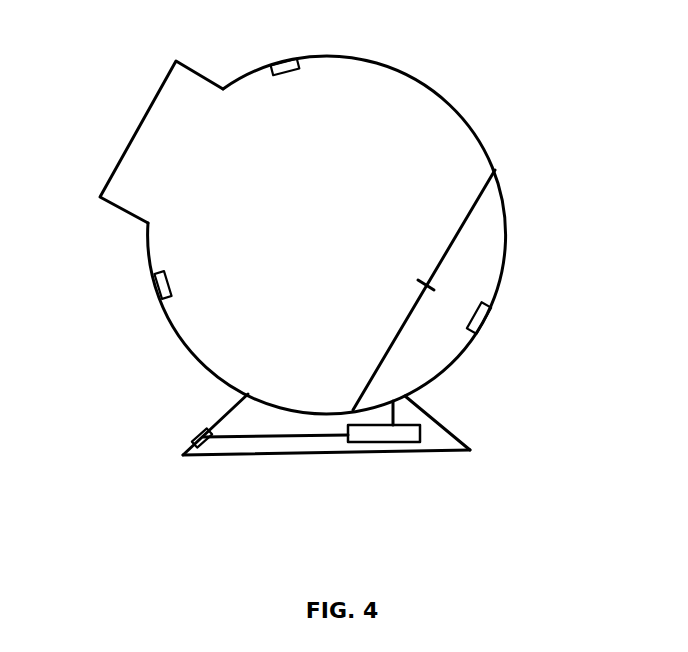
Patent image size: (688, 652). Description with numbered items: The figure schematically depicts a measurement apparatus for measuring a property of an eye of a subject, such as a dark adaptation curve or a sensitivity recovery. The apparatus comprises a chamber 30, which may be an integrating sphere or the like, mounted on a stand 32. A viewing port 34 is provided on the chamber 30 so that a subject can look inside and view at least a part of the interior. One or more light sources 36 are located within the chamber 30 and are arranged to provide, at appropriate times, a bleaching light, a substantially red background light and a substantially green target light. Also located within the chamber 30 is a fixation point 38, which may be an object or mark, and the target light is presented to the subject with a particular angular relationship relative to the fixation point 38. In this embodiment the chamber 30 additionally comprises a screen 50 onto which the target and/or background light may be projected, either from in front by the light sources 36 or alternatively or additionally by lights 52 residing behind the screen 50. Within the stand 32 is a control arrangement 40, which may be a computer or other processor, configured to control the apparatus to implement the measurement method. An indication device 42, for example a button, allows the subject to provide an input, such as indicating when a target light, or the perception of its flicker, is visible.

The chamber 30 is at (452, 115).
The stand 32 is at (470, 452).
The viewing port 34 is at (142, 98).
The light sources 36 is at (283, 79).
The fixation point 38 is at (408, 277).
The control arrangement 40 is at (377, 433).
The indication device 42 is at (198, 435).
The screen 50 is at (465, 233).
The lights 52 is at (490, 318).